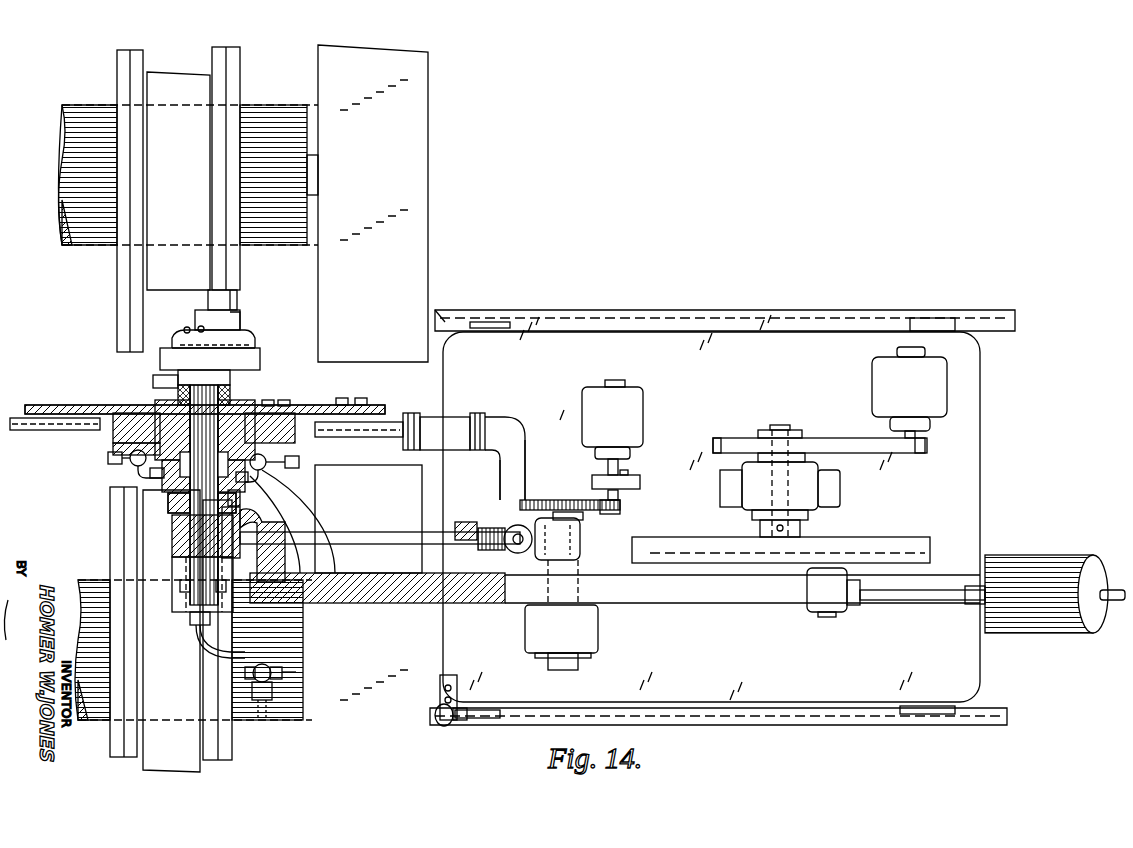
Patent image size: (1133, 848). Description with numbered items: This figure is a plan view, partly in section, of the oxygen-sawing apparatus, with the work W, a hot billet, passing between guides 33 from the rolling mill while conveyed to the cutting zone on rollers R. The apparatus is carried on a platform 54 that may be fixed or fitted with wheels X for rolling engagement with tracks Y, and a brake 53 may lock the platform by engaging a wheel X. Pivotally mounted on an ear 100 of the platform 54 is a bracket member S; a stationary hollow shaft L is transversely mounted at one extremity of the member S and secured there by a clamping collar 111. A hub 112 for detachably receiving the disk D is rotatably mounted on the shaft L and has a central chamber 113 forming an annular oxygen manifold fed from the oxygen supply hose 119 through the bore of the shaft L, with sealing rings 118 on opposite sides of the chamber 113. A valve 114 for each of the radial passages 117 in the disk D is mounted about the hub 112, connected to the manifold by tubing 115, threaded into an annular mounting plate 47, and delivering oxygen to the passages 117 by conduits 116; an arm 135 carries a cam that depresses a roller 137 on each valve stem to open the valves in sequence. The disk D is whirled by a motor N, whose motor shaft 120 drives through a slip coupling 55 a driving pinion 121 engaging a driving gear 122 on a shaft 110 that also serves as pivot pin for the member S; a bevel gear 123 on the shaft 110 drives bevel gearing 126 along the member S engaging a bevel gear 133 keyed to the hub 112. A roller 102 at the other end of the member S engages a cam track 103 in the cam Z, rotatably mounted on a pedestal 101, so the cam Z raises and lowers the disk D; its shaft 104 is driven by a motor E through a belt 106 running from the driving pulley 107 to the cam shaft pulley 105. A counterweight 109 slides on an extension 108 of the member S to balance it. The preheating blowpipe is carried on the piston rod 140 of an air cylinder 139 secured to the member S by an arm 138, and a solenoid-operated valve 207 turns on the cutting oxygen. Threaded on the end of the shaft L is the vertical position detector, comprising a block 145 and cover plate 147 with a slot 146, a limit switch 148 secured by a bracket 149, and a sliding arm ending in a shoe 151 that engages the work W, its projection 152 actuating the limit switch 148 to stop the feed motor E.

The guides 33 is at (143, 62).
The work W is at (198, 72).
The rollers R is at (78, 108).
The limit switch 148 is at (238, 304).
The bracket 149 is at (242, 320).
The slot 146 is at (250, 335).
The cover plate 147 is at (256, 345).
The block 145 is at (262, 362).
The projection 152 is at (185, 328).
The shoe 151 is at (153, 380).
The sealing rings 118 is at (235, 410).
The disk D is at (40, 405).
The passages 117 is at (62, 405).
The brake 53 is at (25, 432).
The hub 112 is at (162, 478).
The annular mounting plate 47 is at (113, 448).
The roller 137 is at (108, 458).
The tubing 115 is at (138, 468).
The valve 114 is at (270, 466).
The central chamber 113 is at (252, 495).
The bevel gear 133 is at (168, 505).
The clamping collar 111 is at (180, 585).
The hollow shaft L is at (250, 522).
The arm 135 is at (305, 508).
The bevel gearing 126 is at (380, 538).
The oxygen supply hose 119 is at (214, 638).
The solenoid-operated normally closed valve 207 is at (262, 664).
The bracket member S is at (372, 603).
The piston rod 140 is at (398, 416).
The conduits 116 is at (276, 402).
The air cylinder 139 is at (458, 418).
The arm 138 is at (500, 488).
The wheels X is at (500, 310).
The tracks Y is at (1002, 336).
The platform 54 is at (768, 710).
The driving gear 122 is at (556, 498).
The driving pinion 121 is at (622, 506).
The motor shaft 120 is at (618, 494).
The shaft 110 is at (584, 513).
The bevel gear 123 is at (582, 560).
The motor N is at (645, 412).
The slip coupling 55 is at (636, 475).
The cam shaft pulley 105 is at (722, 440).
The shaft 104 is at (780, 430).
The belt 106 is at (850, 455).
The pedestal 101 is at (805, 483).
The roller 102 is at (810, 508).
The cam track 103 is at (828, 568).
The motor E is at (886, 374).
The driving pulley 107 is at (928, 446).
The cam Z is at (908, 537).
The counterweight 109 is at (1022, 555).
The extension 108 is at (1118, 590).
The ear 100 is at (598, 635).